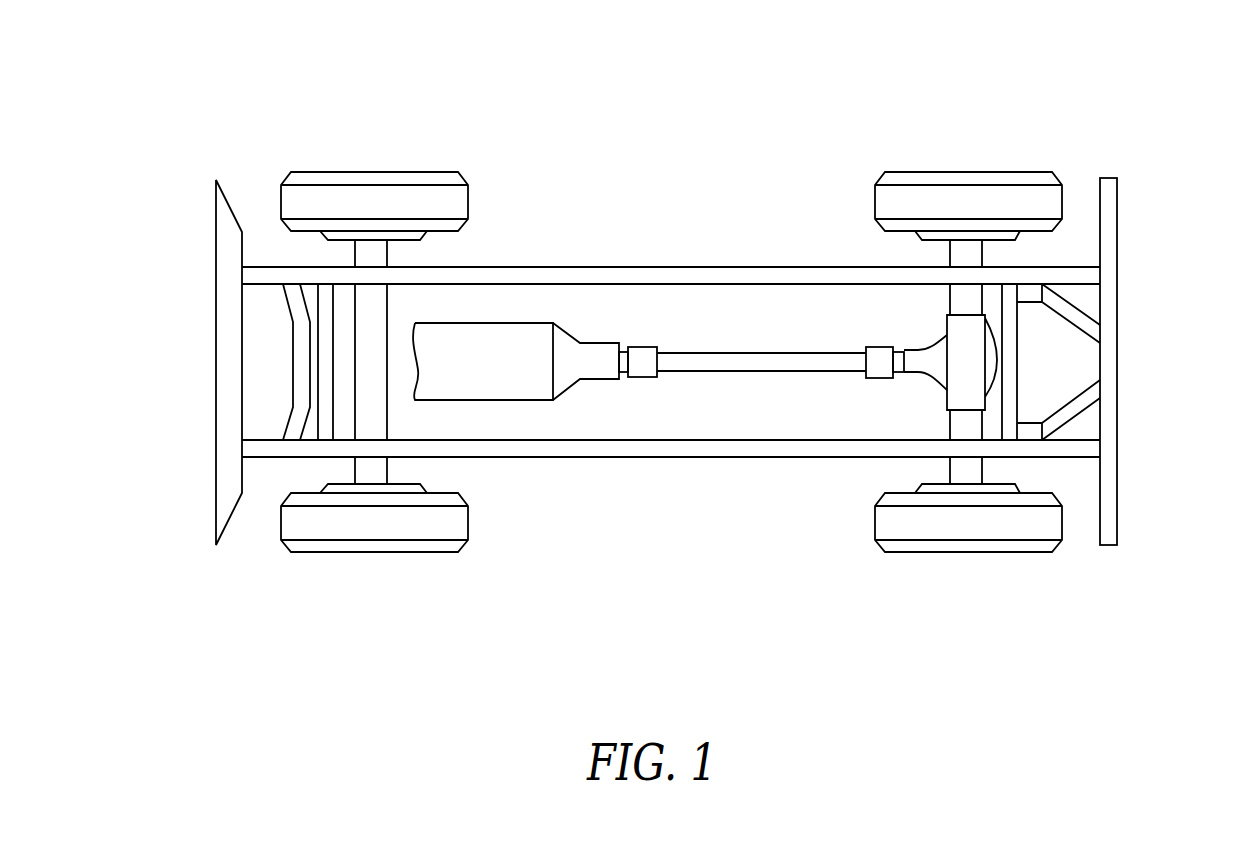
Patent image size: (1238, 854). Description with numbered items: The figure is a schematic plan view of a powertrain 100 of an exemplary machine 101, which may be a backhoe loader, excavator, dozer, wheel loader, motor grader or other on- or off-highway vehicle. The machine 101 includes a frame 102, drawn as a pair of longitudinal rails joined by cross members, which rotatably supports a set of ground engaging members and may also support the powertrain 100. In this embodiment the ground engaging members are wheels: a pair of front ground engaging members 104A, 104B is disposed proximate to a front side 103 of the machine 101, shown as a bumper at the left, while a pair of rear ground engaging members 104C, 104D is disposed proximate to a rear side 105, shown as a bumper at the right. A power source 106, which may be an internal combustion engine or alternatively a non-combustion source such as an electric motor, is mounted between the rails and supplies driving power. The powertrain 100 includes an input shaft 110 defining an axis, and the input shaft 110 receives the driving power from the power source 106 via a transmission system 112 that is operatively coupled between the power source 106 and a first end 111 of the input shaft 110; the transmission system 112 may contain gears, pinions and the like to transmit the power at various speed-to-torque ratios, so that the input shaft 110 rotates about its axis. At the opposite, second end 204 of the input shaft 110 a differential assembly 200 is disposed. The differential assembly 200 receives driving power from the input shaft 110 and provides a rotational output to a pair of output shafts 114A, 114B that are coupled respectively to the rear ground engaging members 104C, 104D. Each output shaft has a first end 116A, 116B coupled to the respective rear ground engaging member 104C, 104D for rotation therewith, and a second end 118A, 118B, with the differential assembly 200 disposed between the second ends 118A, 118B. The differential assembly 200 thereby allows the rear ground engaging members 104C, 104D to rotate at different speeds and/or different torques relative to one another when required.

The powertrain 100 is at (588, 403).
The machine 101 is at (212, 90).
The frame 102 is at (774, 414).
The front side 103 is at (223, 362).
The front ground engaging member 104A is at (367, 552).
The front ground engaging member 104B is at (371, 172).
The rear ground engaging member 104C is at (962, 545).
The rear ground engaging member 104D is at (962, 180).
The rear side 105 is at (1110, 362).
The power source 106 is at (500, 370).
The input shaft 110 is at (687, 362).
The first end 111 is at (622, 362).
The transmission system 112 is at (600, 353).
The output shaft 114A is at (973, 465).
The output shaft 114B is at (970, 258).
The first end 116A is at (962, 485).
The first end 116B is at (947, 256).
The second end 118A is at (947, 410).
The second end 118B is at (946, 315).
The differential assembly 200 is at (903, 333).
The second end 204 is at (898, 363).